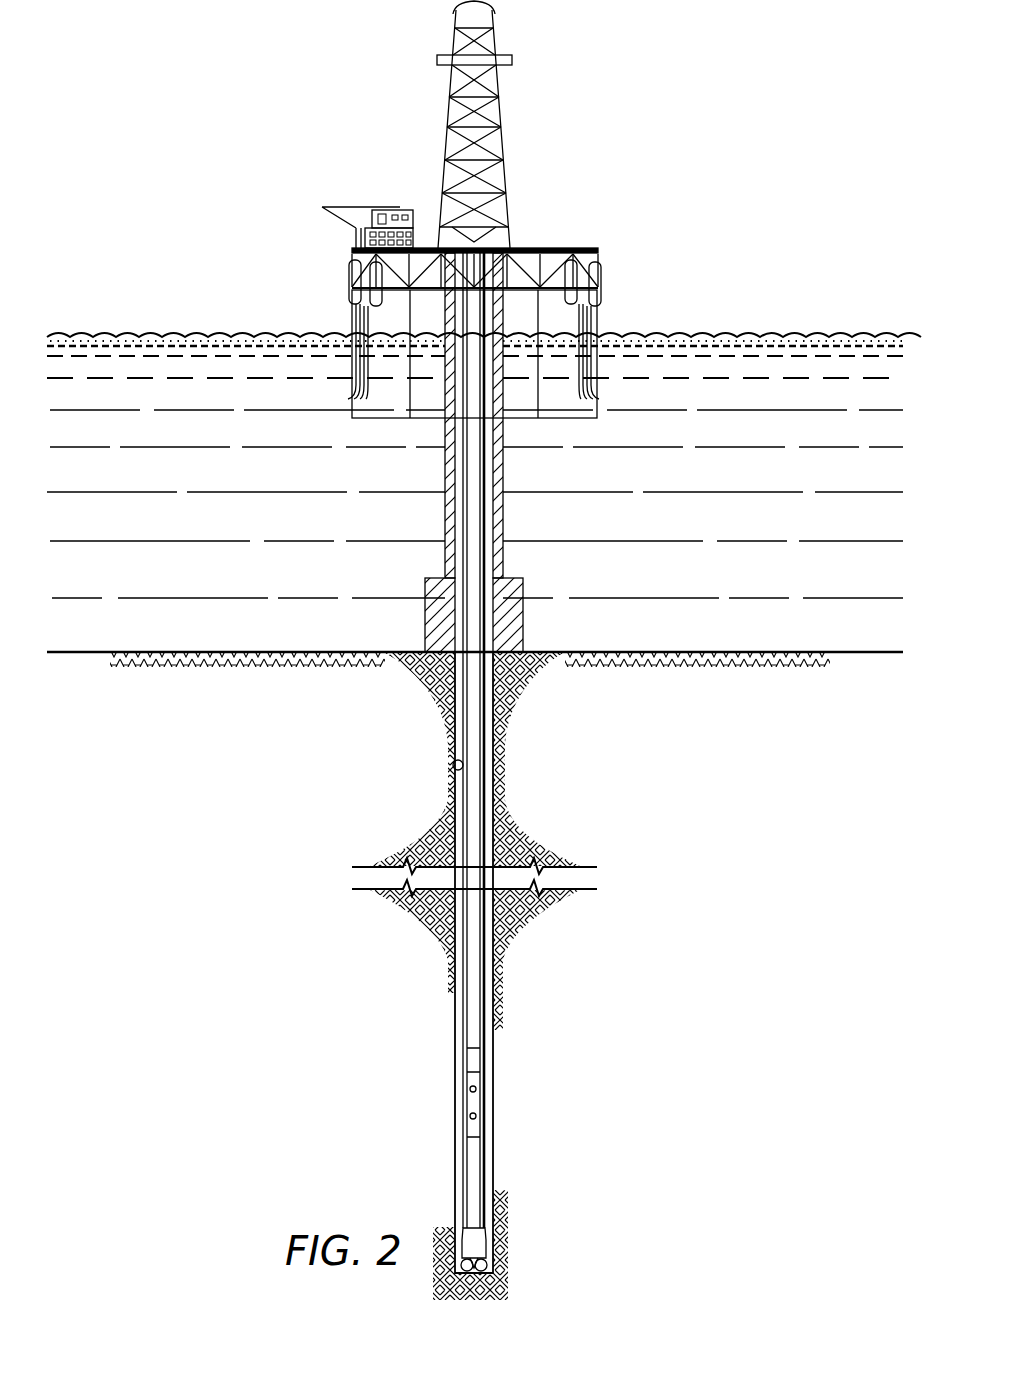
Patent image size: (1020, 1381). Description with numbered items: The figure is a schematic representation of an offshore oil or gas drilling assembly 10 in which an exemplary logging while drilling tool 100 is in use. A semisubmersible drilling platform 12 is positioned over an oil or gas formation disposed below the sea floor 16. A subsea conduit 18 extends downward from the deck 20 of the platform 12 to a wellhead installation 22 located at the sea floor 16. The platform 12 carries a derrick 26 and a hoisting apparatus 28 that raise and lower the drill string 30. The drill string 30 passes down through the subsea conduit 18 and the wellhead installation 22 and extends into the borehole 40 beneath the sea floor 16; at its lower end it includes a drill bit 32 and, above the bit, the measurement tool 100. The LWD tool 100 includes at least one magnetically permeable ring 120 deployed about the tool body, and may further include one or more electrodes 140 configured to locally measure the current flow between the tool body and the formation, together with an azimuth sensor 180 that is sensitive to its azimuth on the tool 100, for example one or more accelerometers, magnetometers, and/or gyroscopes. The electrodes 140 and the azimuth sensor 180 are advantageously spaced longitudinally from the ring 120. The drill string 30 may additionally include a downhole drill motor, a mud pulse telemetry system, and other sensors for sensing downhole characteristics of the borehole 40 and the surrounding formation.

The offshore oil or gas drilling assembly 10 is at (577, 133).
The semisubmersible drilling platform 12 is at (580, 248).
The sea floor 16 is at (760, 651).
The subsea conduit 18 is at (504, 516).
The deck 20 is at (598, 283).
The wellhead installation 22 is at (522, 579).
The derrick 26 is at (478, 232).
The hoisting apparatus 28 is at (498, 46).
The drill string 30 is at (474, 432).
The drill bit 32 is at (495, 1263).
The borehole 40 is at (452, 763).
The logging while drilling tool 100 is at (482, 1099).
The magnetically permeable ring 120 is at (478, 1062).
The electrode 140 is at (470, 1089).
The azimuth sensor 180 is at (478, 1117).